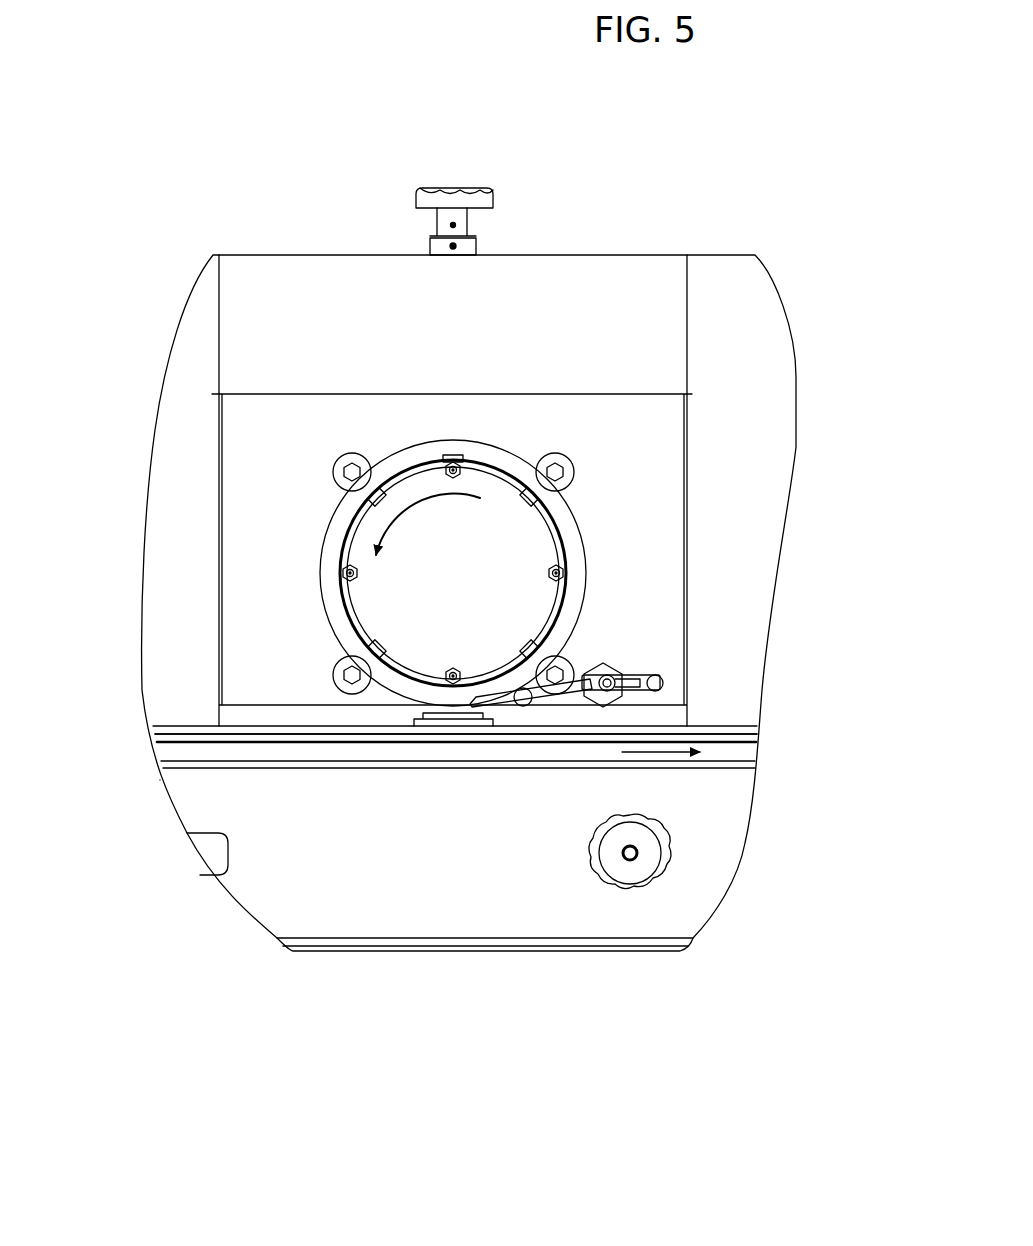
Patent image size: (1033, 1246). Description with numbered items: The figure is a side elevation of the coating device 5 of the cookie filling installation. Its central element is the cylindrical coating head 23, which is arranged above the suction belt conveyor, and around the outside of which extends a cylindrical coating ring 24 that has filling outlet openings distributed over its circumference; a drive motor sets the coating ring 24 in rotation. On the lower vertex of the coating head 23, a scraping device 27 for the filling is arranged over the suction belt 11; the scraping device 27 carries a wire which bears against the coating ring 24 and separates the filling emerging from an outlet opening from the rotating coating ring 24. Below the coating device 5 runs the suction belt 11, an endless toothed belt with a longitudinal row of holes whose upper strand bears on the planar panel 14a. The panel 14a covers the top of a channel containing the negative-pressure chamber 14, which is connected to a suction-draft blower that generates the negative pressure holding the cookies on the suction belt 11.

The coating device 5 is at (288, 233).
The suction belt 11 is at (730, 740).
The negative-pressure chamber 14 is at (330, 883).
The planar panel 14a is at (182, 751).
The coating head 23 is at (594, 561).
The coating ring 24 is at (567, 518).
The scraping device 27 is at (547, 700).